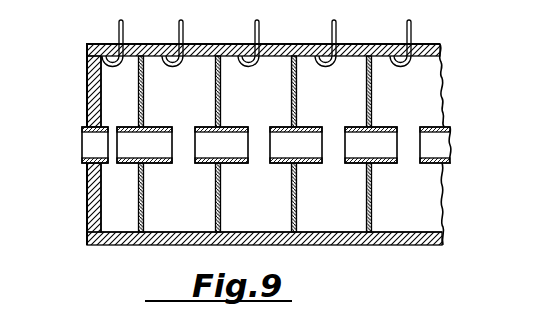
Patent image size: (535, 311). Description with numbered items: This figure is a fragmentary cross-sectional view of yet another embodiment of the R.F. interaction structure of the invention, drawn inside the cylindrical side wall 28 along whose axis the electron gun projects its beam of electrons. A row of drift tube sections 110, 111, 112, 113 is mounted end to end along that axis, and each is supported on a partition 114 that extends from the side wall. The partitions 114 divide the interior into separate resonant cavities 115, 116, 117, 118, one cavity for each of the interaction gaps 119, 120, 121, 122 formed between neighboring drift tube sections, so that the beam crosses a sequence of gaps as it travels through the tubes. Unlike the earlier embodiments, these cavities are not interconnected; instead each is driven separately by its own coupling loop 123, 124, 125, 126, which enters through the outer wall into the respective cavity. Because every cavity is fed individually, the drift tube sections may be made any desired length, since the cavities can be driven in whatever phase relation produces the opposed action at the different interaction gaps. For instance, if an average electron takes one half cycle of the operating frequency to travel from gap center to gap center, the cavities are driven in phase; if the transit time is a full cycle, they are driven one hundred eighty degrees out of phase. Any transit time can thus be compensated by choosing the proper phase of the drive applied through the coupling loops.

The cylindrical side wall 28 is at (441, 44).
The drift tube section 110 is at (158, 125).
The drift tube section 111 is at (227, 125).
The drift tube section 112 is at (306, 125).
The drift tube section 113 is at (387, 125).
The partition 114 is at (217, 187).
The cavity 115 is at (125, 220).
The cavity 116 is at (189, 220).
The cavity 117 is at (273, 222).
The cavity 118 is at (348, 220).
The interaction gap 119 is at (113, 124).
The interaction gap 120 is at (180, 129).
The interaction gap 121 is at (252, 129).
The interaction gap 122 is at (332, 126).
The coupling loop 123 is at (123, 32).
The coupling loop 124 is at (183, 32).
The coupling loop 125 is at (259, 32).
The coupling loop 126 is at (336, 32).